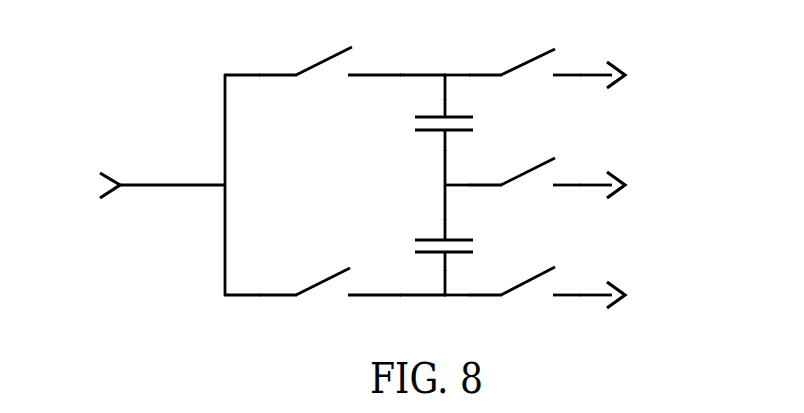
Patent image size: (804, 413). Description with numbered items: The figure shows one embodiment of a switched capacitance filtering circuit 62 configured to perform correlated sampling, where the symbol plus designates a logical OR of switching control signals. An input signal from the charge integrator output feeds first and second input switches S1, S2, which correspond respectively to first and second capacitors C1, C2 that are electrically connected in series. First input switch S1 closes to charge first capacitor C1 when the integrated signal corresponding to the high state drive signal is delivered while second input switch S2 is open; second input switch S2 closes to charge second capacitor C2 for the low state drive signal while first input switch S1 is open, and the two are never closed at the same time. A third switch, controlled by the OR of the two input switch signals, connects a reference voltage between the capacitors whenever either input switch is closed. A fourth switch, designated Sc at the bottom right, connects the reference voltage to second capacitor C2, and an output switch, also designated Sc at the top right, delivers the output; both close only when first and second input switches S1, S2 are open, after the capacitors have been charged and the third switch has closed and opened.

The switched capacitance filtering circuit 62 is at (147, 97).
The first input switch S1 is at (330, 43).
The second input switch S2 is at (330, 264).
The first capacitor C1 is at (422, 124).
The second capacitor C2 is at (422, 244).
The fourth switch and output switch Sc is at (525, 151).